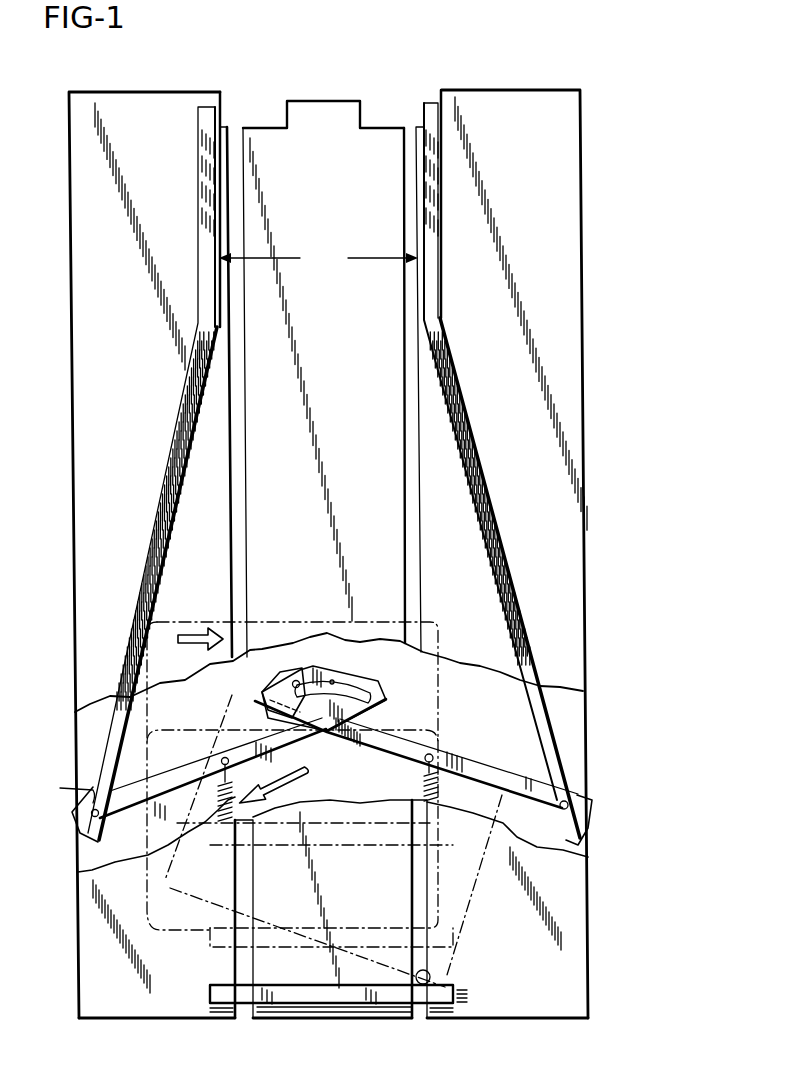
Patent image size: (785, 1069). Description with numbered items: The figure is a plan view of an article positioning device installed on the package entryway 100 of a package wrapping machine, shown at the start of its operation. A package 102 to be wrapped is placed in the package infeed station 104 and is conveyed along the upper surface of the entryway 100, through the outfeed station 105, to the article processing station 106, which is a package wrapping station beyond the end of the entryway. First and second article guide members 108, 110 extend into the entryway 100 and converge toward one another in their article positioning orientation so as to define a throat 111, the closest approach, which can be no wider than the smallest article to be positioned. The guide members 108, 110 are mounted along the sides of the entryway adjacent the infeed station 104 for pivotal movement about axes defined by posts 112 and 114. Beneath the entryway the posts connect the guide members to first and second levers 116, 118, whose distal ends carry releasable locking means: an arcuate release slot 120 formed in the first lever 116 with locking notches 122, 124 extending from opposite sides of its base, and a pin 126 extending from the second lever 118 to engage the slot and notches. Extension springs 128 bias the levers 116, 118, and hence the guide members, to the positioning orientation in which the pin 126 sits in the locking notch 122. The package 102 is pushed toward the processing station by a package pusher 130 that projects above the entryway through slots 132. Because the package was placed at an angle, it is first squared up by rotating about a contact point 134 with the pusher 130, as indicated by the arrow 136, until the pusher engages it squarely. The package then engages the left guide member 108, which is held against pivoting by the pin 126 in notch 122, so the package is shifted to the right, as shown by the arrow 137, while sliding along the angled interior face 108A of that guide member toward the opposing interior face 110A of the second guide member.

The package entryway 100 is at (589, 244).
The package 102 is at (433, 622).
The package infeed station 104 is at (105, 950).
The outfeed station 105 is at (350, 196).
The article processing station 106 is at (347, 60).
The first article guide member 108 is at (168, 455).
The angled interior face 108A is at (198, 423).
The second article guide member 110 is at (482, 482).
The angled interior face 110A is at (460, 442).
The throat 111 is at (318, 258).
The post 112 is at (70, 789).
The post 114 is at (568, 788).
The first lever 116 is at (76, 857).
The second lever 118 is at (447, 753).
The arcuate release slot 120 is at (332, 680).
The locking notch 122 is at (237, 708).
The locking notch 124 is at (277, 680).
The pin 126 is at (297, 680).
The extension spring 128 is at (439, 792).
The package pusher 130 is at (362, 927).
The slot 132 is at (404, 503).
The contact point 134 is at (395, 1013).
The arrow 136 is at (302, 773).
The arrow 137 is at (193, 623).